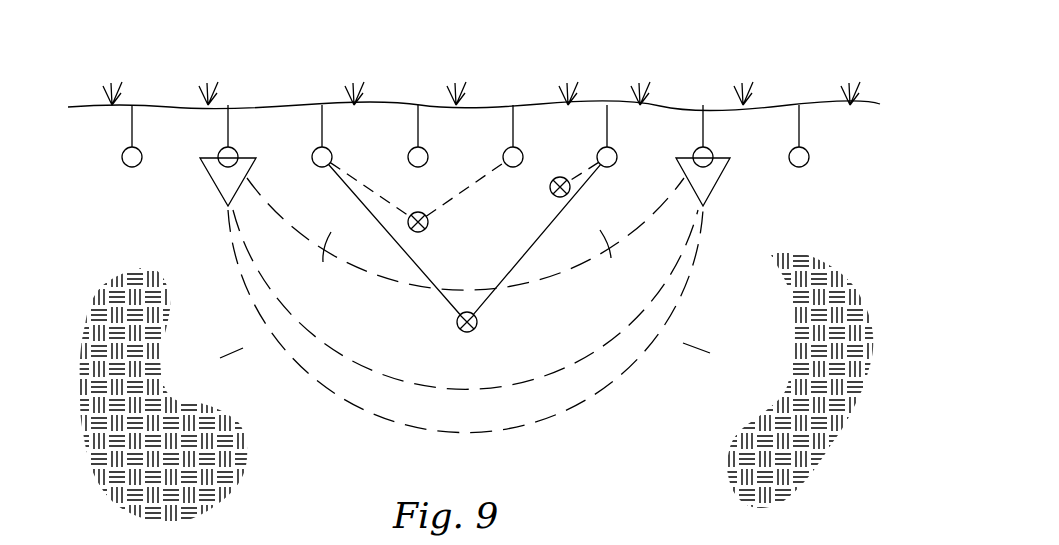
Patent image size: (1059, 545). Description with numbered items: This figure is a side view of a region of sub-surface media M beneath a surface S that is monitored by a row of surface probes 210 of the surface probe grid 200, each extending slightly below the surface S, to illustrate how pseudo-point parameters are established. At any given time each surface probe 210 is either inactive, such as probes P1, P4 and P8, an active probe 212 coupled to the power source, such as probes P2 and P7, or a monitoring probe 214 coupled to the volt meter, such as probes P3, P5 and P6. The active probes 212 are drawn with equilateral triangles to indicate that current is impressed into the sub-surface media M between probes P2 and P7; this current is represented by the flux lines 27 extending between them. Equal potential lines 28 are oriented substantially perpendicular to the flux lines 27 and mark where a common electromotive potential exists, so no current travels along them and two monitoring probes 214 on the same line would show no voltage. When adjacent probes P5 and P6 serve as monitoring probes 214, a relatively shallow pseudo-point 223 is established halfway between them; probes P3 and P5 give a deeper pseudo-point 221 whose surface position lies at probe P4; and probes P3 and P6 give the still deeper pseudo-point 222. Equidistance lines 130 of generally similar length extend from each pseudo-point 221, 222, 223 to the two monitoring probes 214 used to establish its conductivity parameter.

The surface probe grid 200 is at (702, 79).
The surface probe 210 is at (127, 150).
The active probe 212 is at (217, 187).
The monitoring probe 214 is at (323, 148).
The equidistance line 130 is at (540, 171).
The pseudo-point 221 is at (428, 226).
The pseudo-point 222 is at (458, 330).
The pseudo-point 223 is at (574, 190).
The flux line 27 is at (398, 286).
The equal potential line 28 is at (243, 348).
The surface S is at (595, 104).
The sub-surface media M is at (762, 313).
The probe P1 is at (122, 165).
The probe P2 is at (218, 155).
The probe P3 is at (315, 167).
The probe P4 is at (408, 160).
The probe P5 is at (505, 150).
The probe P6 is at (600, 150).
The probe P7 is at (695, 150).
The probe P8 is at (793, 148).